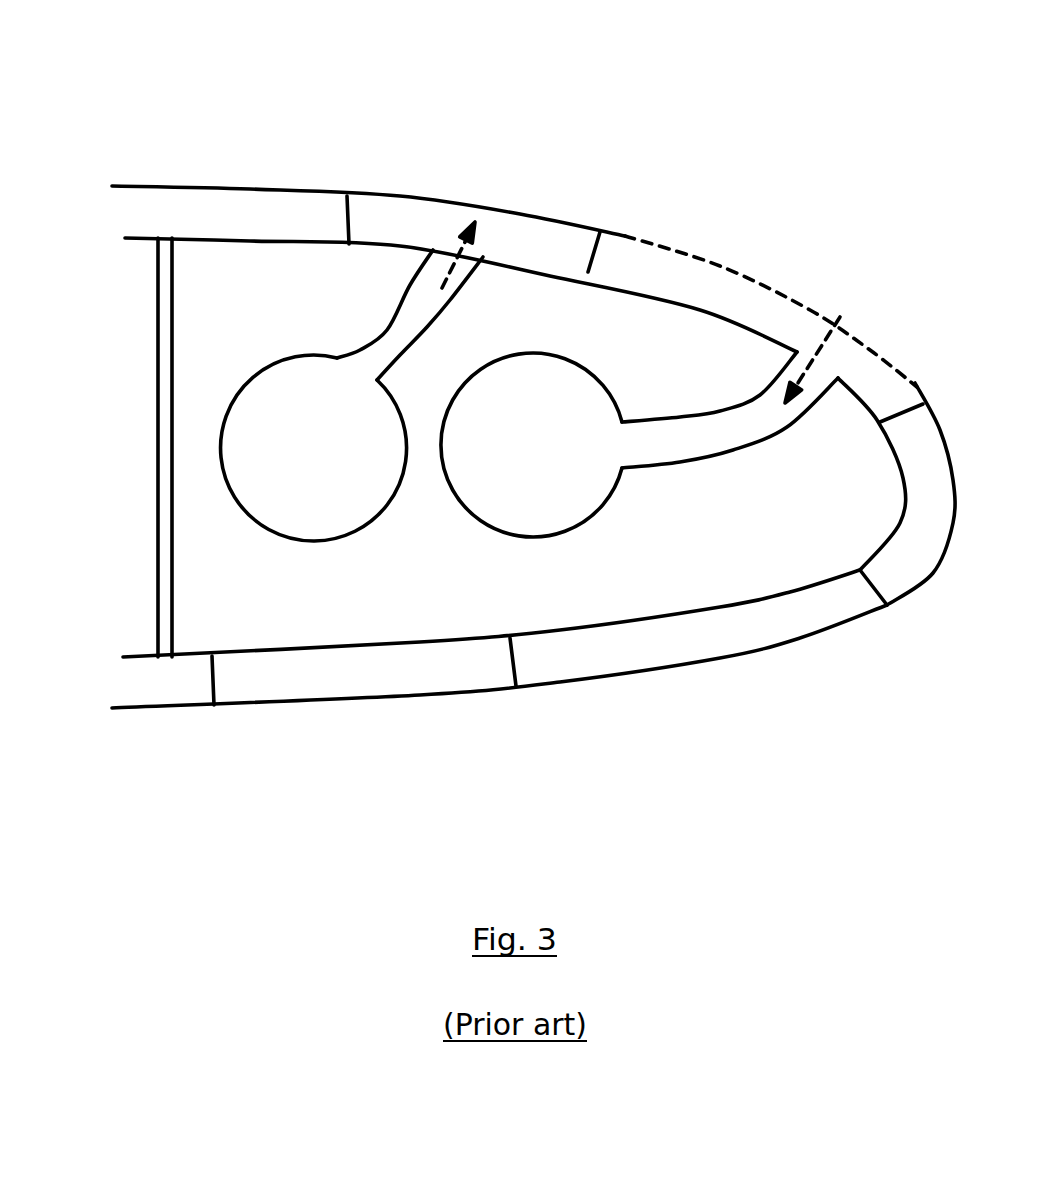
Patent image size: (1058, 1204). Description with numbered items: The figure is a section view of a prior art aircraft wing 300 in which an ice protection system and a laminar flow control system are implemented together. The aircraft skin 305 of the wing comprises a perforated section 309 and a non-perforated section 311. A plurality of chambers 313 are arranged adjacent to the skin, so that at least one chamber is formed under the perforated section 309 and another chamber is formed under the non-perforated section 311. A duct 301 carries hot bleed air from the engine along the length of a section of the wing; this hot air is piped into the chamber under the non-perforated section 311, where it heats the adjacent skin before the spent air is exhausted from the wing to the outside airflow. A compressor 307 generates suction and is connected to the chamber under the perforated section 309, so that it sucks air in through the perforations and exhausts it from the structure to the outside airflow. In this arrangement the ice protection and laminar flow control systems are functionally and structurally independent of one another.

The aircraft wing 300 is at (128, 150).
The duct 301 is at (322, 510).
The aircraft skin 305 is at (810, 640).
The compressor 307 is at (573, 498).
The perforated section 309 is at (813, 308).
The non-perforated section 311 is at (465, 203).
The chambers 313 is at (647, 265).